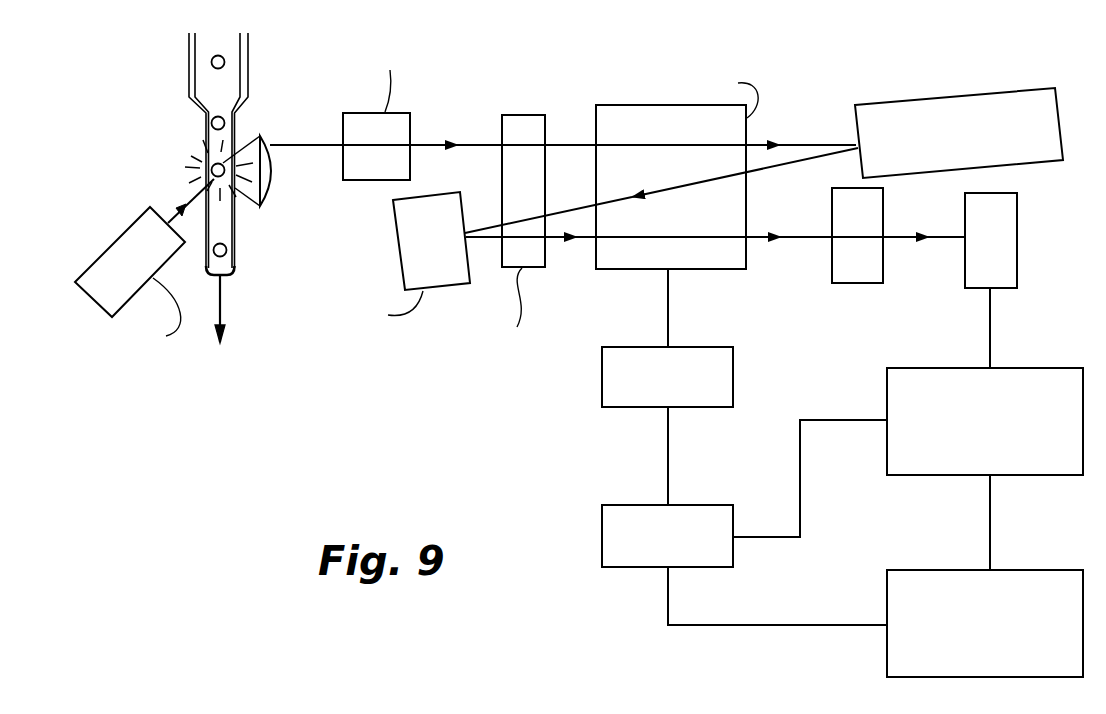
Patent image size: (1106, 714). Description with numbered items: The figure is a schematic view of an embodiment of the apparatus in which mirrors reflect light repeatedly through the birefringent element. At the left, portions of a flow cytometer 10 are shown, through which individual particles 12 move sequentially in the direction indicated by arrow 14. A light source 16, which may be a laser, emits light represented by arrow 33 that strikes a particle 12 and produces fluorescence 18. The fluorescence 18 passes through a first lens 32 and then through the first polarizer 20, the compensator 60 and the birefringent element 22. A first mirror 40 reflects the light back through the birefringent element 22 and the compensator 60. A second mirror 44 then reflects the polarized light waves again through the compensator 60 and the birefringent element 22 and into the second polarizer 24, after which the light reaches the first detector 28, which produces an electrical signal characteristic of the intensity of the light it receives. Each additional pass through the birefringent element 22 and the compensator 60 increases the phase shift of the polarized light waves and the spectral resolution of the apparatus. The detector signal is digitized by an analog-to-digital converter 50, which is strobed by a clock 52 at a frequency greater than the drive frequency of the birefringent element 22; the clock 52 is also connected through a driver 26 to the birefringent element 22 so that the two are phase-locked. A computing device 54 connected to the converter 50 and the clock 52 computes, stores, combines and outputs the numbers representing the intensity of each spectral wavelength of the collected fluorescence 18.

The flow cytometer 10 is at (188, 65).
The particle 12 is at (212, 125).
The arrow 14 is at (222, 305).
The light source 16 is at (152, 263).
The fluorescence 18 is at (242, 199).
The first polarizer 20 is at (391, 139).
The birefringent element 22 is at (679, 136).
The second polarizer 24 is at (871, 274).
The driver 26 is at (735, 378).
The first detector 28 is at (1004, 256).
The first lens 32 is at (268, 141).
The light from light source 33 is at (183, 207).
The first mirror 40 is at (1042, 144).
The second mirror 44 is at (446, 251).
The analog-to-digital converter 50 is at (996, 453).
The clock 52 is at (735, 560).
The computing device 54 is at (996, 664).
The compensator 60 is at (537, 183).